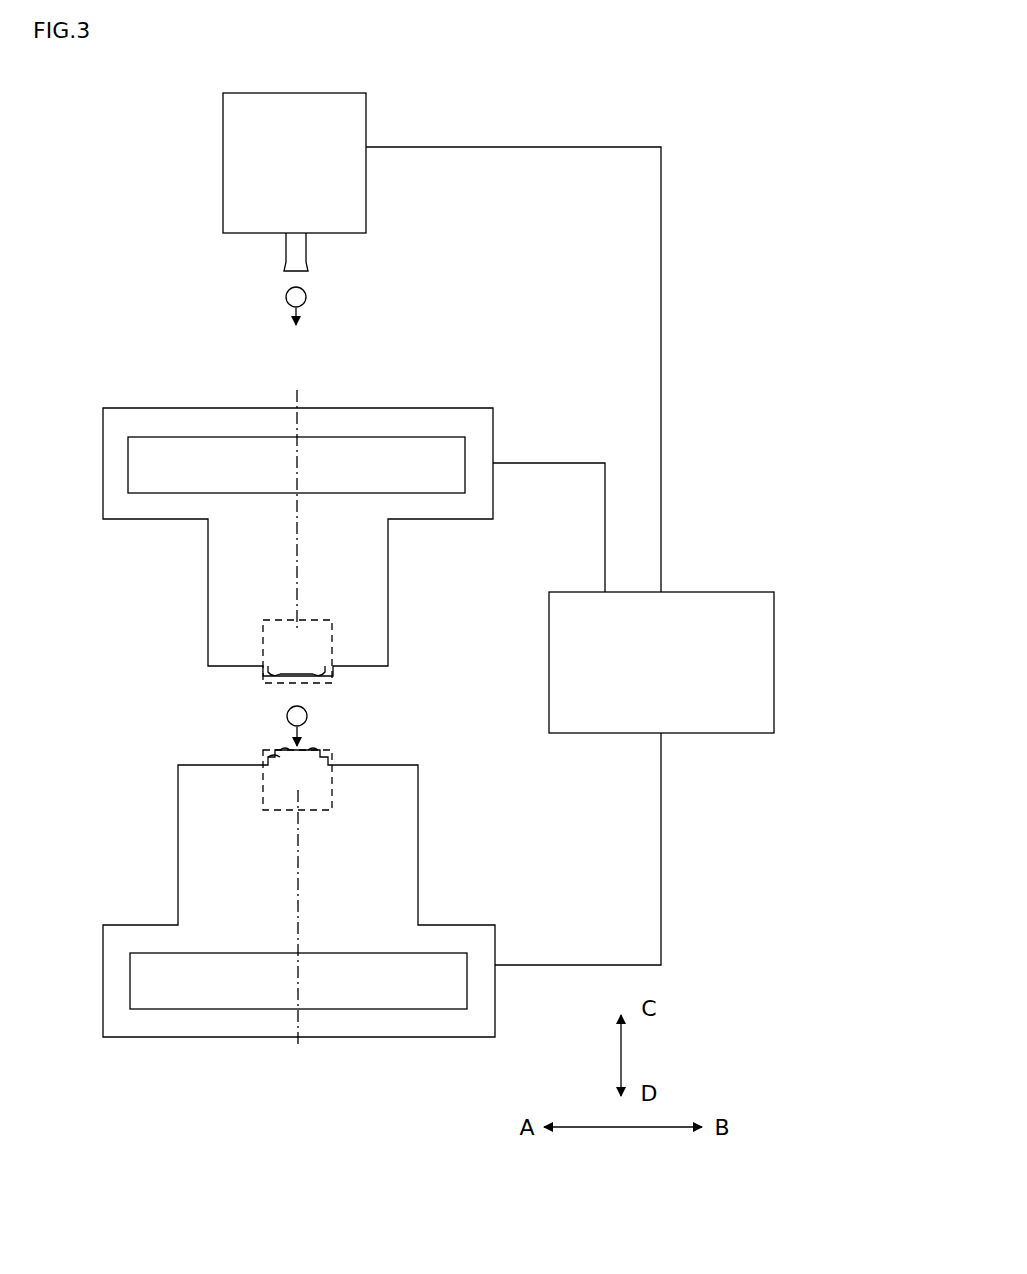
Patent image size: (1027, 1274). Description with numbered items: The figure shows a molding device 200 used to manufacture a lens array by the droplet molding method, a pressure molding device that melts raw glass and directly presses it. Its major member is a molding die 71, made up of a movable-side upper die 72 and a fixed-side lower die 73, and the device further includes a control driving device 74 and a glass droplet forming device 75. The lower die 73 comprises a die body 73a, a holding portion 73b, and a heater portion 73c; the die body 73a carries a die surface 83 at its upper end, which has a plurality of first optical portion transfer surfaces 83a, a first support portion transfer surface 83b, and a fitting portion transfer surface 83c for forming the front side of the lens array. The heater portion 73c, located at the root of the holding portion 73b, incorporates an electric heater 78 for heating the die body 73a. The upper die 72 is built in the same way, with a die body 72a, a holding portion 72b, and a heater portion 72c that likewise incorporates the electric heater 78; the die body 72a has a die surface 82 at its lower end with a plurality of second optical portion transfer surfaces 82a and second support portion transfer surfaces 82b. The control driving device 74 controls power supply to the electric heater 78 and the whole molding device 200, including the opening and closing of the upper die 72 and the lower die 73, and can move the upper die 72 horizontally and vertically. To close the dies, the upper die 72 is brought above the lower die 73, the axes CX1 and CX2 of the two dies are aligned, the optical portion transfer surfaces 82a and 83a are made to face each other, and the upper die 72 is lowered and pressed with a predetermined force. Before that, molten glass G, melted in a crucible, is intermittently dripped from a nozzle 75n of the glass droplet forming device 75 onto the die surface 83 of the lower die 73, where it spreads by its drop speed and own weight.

The molding device 200 is at (678, 73).
The molding die 71 is at (82, 376).
The upper die 72 is at (279, 524).
The die body 72a is at (273, 620).
The holding portion 72b is at (215, 572).
The heater portion 72c is at (118, 460).
The lower die 73 is at (278, 917).
The die body 73a is at (273, 812).
The holding portion 73b is at (215, 828).
The heater portion 73c is at (118, 983).
The control driving device 74 is at (718, 618).
The glass droplet forming device 75 is at (295, 118).
The nozzle 75n is at (305, 252).
The electric heater 78 is at (238, 725).
The die surface 82 is at (279, 696).
The second optical portion transfer surface 82a is at (280, 678).
The second support portion transfer surface 82b is at (308, 678).
The die surface 83 is at (309, 736).
The first optical portion transfer surface 83a is at (268, 756).
The first support portion transfer surface 83b is at (281, 749).
The fitting portion transfer surface 83c is at (323, 747).
The molten glass G is at (306, 294).
The axis of the upper die CX1 is at (300, 528).
The axis of the lower die CX2 is at (302, 878).